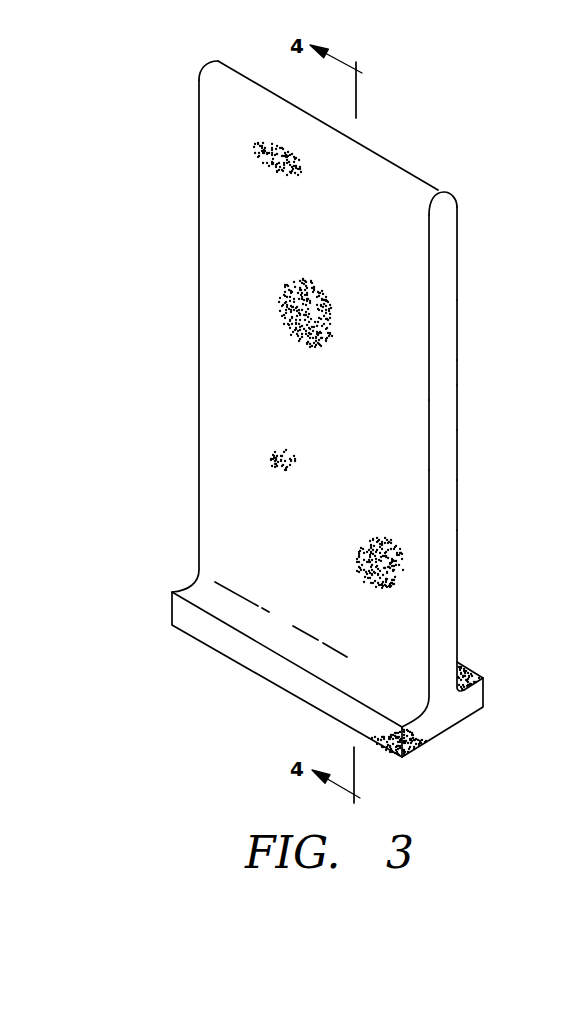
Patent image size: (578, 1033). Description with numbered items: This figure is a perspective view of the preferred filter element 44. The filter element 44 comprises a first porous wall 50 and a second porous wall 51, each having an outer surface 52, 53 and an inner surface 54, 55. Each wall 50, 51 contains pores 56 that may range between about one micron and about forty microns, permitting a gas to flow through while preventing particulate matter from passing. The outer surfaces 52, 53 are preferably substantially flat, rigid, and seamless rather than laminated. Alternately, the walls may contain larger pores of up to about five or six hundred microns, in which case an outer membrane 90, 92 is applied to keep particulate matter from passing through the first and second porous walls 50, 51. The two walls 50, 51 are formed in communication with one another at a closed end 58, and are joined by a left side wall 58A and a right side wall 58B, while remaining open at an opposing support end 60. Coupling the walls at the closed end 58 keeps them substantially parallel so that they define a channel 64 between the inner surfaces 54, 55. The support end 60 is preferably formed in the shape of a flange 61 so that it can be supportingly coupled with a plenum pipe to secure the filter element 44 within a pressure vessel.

The filter element 44 is at (173, 460).
The first porous wall 50 is at (400, 268).
The second porous wall 51 is at (457, 250).
The outer surface of first porous wall 52 is at (411, 477).
The outer surface of second porous wall 53 is at (457, 460).
The inner surface of first porous wall 54 is at (430, 535).
The inner surface of second porous wall 55 is at (458, 558).
The pores 56 is at (280, 457).
The closed end 58 is at (430, 187).
The left side wall 58A is at (199, 114).
The right side wall 58B is at (445, 428).
The support end 60 is at (425, 743).
The flange 61 is at (263, 657).
The channel 64 is at (442, 342).
The outer membrane of first porous wall 90 is at (403, 390).
The outer membrane of second porous wall 92 is at (457, 373).